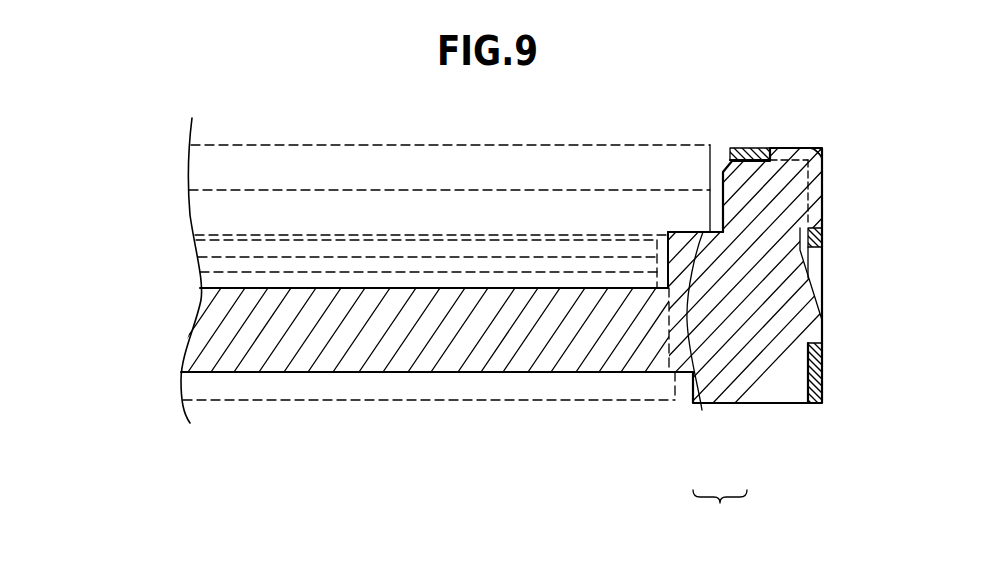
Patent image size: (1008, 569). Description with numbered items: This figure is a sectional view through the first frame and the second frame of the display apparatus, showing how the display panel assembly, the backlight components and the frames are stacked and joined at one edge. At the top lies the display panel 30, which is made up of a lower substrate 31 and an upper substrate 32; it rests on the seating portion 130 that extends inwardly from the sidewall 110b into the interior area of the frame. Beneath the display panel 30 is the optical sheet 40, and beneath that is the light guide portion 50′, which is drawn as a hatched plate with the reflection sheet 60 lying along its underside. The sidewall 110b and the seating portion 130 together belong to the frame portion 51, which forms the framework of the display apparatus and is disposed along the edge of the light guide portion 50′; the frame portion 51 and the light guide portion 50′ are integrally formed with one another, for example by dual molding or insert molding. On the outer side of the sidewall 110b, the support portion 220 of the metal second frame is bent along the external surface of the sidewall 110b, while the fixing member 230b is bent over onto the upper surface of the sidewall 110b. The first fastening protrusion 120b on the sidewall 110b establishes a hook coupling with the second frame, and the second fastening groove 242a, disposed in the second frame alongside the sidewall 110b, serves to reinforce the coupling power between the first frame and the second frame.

The display panel 30 is at (104, 160).
The lower substrate 31 is at (210, 220).
The upper substrate 32 is at (205, 172).
The optical sheet 40 is at (191, 240).
The light guide portion 50′ is at (260, 343).
The reflection sheet 60 is at (340, 387).
The frame portion 51 is at (720, 513).
The sidewall 110b is at (744, 347).
The seating portion 130 is at (702, 410).
The fixing member 230b is at (750, 148).
The first fastening protrusion 120b is at (803, 172).
The second fastening groove 242a is at (813, 266).
The support portion 220 is at (822, 357).